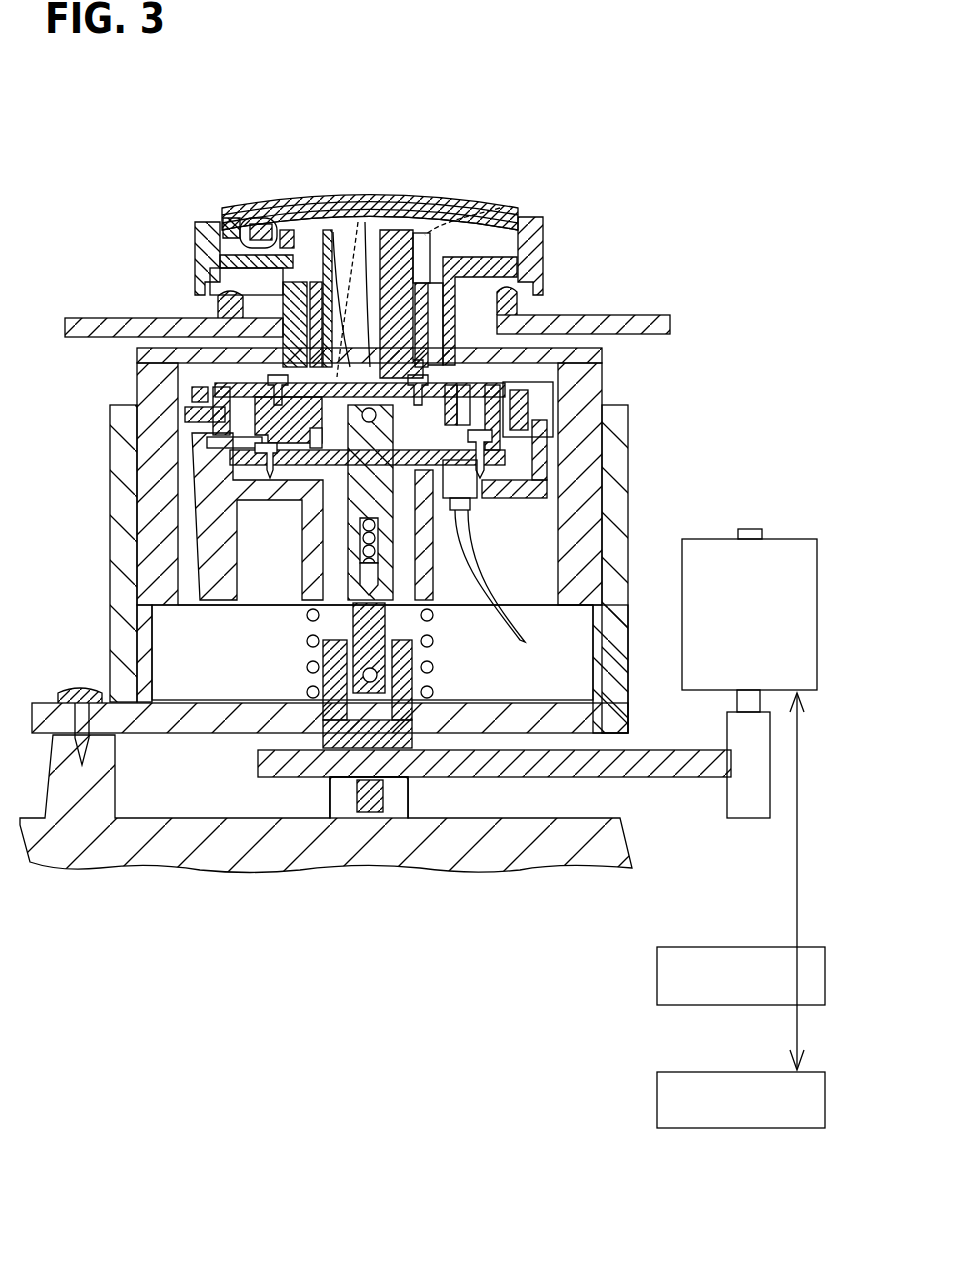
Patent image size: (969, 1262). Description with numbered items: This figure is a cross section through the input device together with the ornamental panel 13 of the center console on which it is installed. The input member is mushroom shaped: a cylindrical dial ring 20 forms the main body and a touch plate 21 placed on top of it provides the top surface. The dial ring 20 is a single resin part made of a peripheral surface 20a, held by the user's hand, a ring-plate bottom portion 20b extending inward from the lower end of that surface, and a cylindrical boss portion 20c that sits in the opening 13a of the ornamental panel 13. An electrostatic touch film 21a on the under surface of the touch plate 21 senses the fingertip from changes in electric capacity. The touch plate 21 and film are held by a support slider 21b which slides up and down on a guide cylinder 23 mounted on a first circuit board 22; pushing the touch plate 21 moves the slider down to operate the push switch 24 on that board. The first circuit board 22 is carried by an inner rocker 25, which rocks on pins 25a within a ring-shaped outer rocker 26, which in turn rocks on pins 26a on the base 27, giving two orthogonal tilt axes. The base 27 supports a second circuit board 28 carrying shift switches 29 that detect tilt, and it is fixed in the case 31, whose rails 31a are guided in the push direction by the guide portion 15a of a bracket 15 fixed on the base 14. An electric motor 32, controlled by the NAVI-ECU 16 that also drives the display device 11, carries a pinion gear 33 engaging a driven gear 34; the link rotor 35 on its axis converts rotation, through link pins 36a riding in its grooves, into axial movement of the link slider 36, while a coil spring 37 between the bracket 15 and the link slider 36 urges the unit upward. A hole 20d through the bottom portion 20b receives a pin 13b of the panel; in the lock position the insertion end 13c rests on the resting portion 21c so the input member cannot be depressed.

The display device 11 is at (680, 1072).
The ornamental panel 13 is at (88, 318).
The opening 13a is at (263, 323).
The pin 13b is at (517, 281).
The insertion end 13c is at (508, 250).
The base 14 is at (130, 845).
The bracket 15 is at (55, 703).
The guide portion 15a is at (120, 495).
The NAVI-ECU 16 is at (677, 947).
The dial ring 20 is at (207, 218).
The peripheral surface 20a is at (193, 250).
The bottom portion 20b is at (260, 222).
The boss portion 20c is at (290, 230).
The hole 20d is at (540, 236).
The touch plate 21 is at (378, 213).
The electrostatic touch film 21a is at (437, 212).
The support slider 21b is at (480, 210).
The resting portion 21c is at (535, 222).
The first circuit board 22 is at (500, 312).
The guide cylinder 23 is at (500, 210).
The push switch 24 is at (360, 225).
The inner rocker 25 is at (500, 313).
The pins 25a is at (137, 379).
The outer rocker 26 is at (555, 358).
The pins 26a is at (137, 420).
The base 27 is at (558, 456).
The second circuit board 28 is at (585, 500).
The shift switches 29 is at (250, 449).
The case 31 is at (167, 602).
The rails 31a is at (153, 547).
The electric motor 32 is at (780, 537).
The pinion gear 33 is at (745, 818).
The driven gear 34 is at (658, 777).
The link rotor 35 is at (250, 703).
The link slider 36 is at (307, 633).
The link pins 36a is at (380, 675).
The coil spring 37 is at (307, 660).